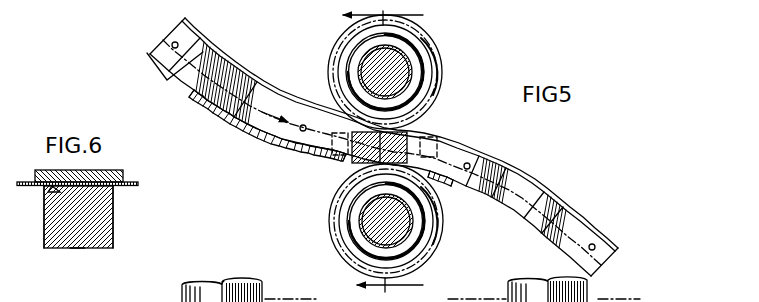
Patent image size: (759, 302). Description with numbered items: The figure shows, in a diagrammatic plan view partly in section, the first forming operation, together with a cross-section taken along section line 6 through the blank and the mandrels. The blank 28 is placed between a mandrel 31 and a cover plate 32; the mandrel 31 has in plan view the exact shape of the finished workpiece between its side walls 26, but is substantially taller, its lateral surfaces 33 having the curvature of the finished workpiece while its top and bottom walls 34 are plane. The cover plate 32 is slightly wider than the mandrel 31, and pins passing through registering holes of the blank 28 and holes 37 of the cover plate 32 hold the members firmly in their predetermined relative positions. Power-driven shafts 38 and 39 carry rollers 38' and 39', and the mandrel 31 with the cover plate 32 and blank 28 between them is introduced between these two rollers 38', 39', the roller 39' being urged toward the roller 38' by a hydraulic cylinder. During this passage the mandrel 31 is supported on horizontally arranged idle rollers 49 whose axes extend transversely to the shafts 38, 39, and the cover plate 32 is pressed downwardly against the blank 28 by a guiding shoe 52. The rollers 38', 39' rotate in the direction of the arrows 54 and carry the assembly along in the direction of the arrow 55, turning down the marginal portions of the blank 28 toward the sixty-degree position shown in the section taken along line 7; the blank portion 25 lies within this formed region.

In FIG. 5, the section line 6 is at (278, 90).
In FIG. 5, the section line 7 is at (390, 152).
In FIG. 5, the band portion 25 is at (520, 185).
In FIG. 5, the side walls 26 is at (560, 193).
In FIG. 5, the blank 28 is at (227, 65).
In FIG. 6, the blank 28 is at (134, 187).
In FIG. 5, the mandrel 31 is at (208, 102).
In FIG. 6, the mandrel 31 is at (107, 230).
In FIG. 5, the cover plate 32 is at (175, 62).
In FIG. 6, the cover plate 32 is at (110, 171).
In FIG. 6, the lateral surfaces 33 is at (43, 223).
In FIG. 6, the top and bottom walls 34 is at (43, 172).
In FIG. 5, the holes 37 is at (172, 44).
In FIG. 5, the shaft 38 is at (374, 72).
In FIG. 5, the roller 38' is at (415, 72).
In FIG. 5, the shaft 39 is at (371, 221).
In FIG. 5, the roller 39' is at (416, 221).
In FIG. 5, the idle rollers 49 is at (438, 134).
In FIG. 5, the guiding shoe 52 is at (347, 164).
In FIG. 5, the arrows 54 is at (432, 85).
In FIG. 5, the arrow 55 is at (275, 126).